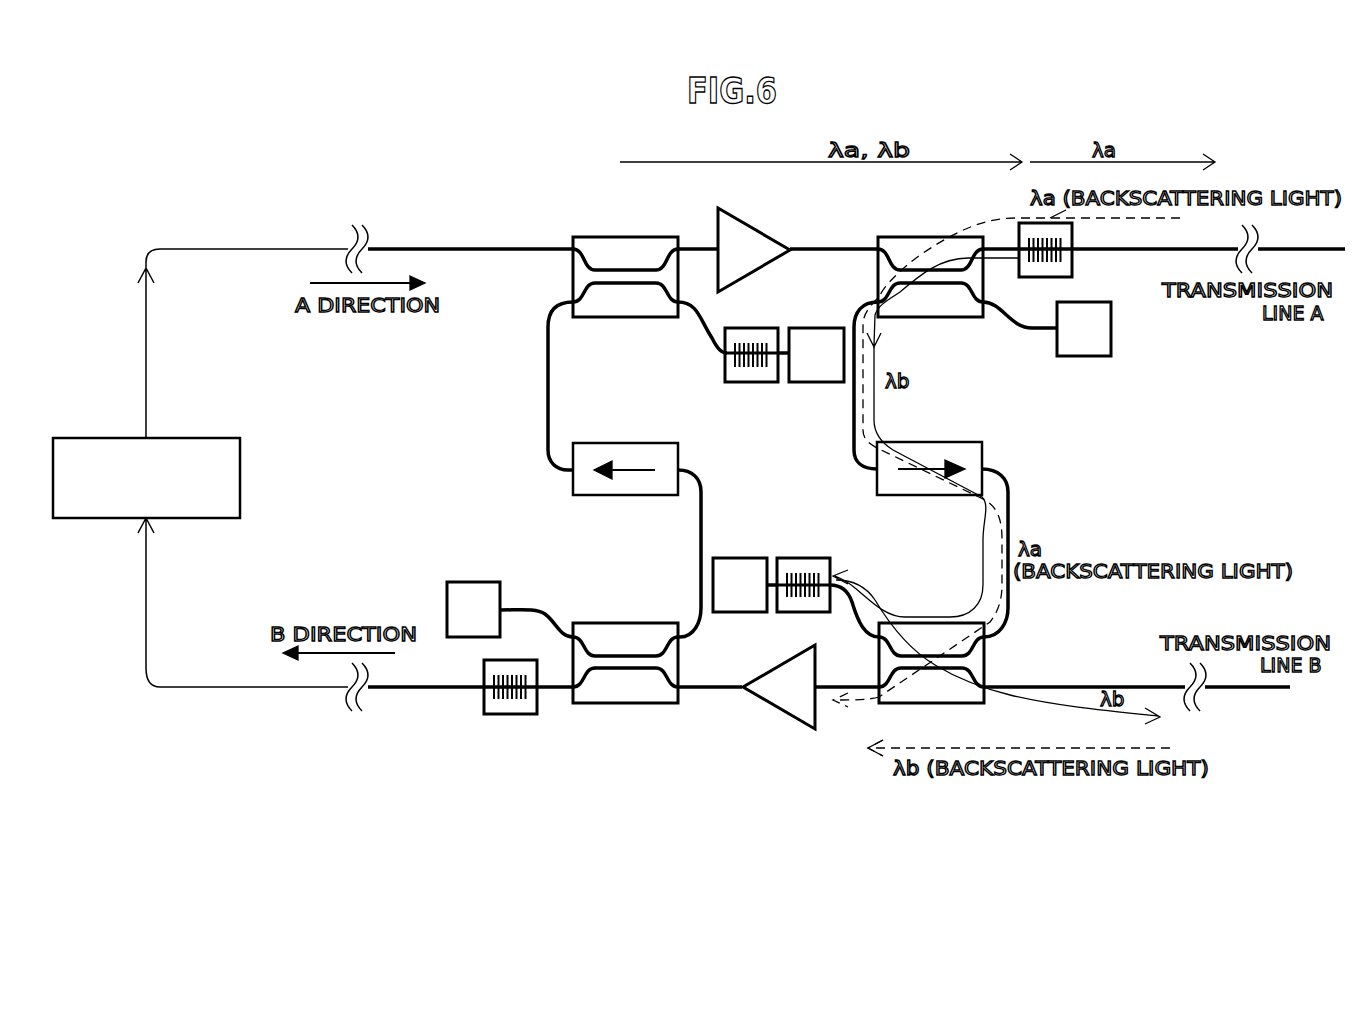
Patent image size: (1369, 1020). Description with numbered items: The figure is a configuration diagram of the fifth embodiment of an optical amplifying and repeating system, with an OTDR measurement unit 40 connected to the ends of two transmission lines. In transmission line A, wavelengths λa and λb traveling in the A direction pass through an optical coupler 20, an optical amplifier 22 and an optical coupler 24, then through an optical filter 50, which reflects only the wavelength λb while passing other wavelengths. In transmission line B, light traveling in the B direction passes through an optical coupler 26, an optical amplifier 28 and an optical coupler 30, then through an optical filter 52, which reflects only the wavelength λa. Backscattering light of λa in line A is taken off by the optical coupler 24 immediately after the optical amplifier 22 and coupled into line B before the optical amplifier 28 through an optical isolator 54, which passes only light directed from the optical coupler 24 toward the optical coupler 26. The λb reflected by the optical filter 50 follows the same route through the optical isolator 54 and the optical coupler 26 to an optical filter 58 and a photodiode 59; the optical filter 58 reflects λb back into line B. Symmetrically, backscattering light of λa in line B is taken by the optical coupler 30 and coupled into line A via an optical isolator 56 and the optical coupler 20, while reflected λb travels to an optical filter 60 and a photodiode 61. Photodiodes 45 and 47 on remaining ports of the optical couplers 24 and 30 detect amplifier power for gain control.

The optical coupler 20 is at (630, 236).
The optical amplifier 22 is at (768, 236).
The optical coupler 24 is at (900, 236).
The optical coupler 26 is at (985, 661).
The optical amplifier 28 is at (768, 672).
The optical coupler 30 is at (602, 622).
The OTDR measurement unit 40 is at (240, 480).
The photodiode 45 is at (1111, 330).
The photodiode 47 is at (474, 582).
The optical filter 50 is at (1072, 268).
The optical filter 52 is at (484, 702).
The optical isolator 54 is at (982, 452).
The optical isolator 56 is at (678, 455).
The optical filter 58 is at (805, 558).
The photodiode 59 is at (740, 558).
The optical filter 60 is at (725, 378).
The photodiode 61 is at (818, 382).